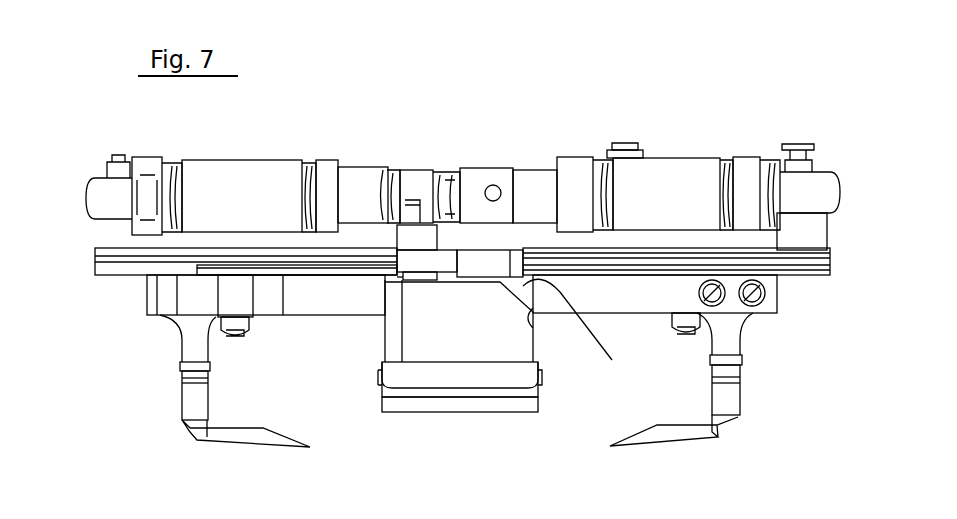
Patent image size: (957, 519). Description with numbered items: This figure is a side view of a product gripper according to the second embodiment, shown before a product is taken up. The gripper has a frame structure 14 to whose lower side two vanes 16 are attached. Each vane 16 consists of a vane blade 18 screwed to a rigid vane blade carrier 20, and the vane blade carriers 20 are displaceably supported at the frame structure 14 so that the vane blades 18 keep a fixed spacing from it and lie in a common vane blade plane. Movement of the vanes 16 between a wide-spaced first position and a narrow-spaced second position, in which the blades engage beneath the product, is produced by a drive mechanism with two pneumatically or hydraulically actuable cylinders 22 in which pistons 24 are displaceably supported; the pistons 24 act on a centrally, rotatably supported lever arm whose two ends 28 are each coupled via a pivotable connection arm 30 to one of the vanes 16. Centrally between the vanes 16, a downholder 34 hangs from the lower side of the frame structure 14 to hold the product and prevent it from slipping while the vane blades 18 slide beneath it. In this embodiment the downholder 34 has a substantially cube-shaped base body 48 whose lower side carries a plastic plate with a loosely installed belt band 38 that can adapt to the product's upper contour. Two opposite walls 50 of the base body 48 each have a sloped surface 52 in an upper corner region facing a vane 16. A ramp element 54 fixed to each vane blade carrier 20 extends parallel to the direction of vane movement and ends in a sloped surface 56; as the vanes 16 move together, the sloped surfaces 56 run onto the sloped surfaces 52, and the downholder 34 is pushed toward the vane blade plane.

The frame structure 14 is at (122, 268).
The vane 16 is at (183, 405).
The vane blade 18 is at (256, 440).
The vane blade carrier 20 is at (180, 341).
The cylinder 22 is at (251, 178).
The piston 24 is at (463, 178).
The end of the lever arm 28 is at (418, 237).
The connection arm 30 is at (311, 262).
The downholder 34 is at (496, 336).
The belt band 38 is at (512, 413).
The base body 48 is at (448, 338).
The wall 50 is at (507, 347).
The sloped surface 52 is at (533, 332).
The ramp element 54 is at (338, 300).
The sloped surface 56 is at (574, 333).